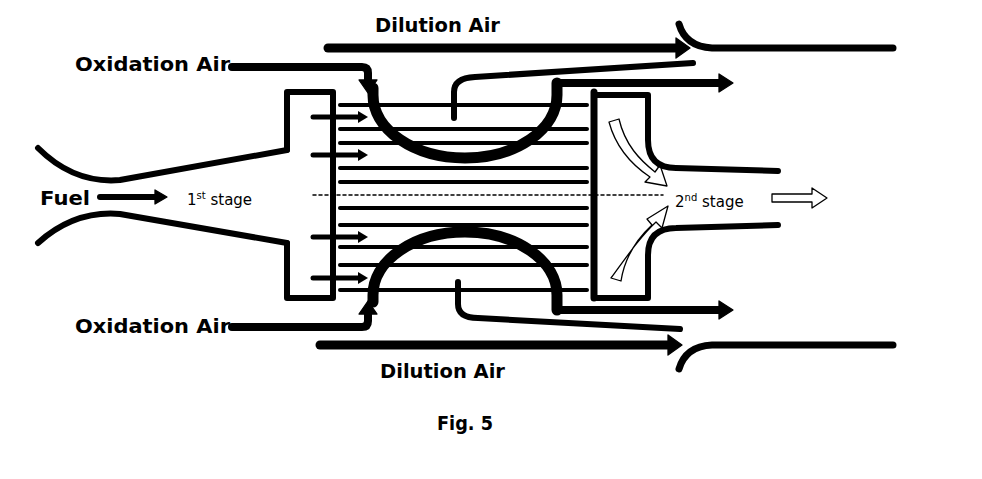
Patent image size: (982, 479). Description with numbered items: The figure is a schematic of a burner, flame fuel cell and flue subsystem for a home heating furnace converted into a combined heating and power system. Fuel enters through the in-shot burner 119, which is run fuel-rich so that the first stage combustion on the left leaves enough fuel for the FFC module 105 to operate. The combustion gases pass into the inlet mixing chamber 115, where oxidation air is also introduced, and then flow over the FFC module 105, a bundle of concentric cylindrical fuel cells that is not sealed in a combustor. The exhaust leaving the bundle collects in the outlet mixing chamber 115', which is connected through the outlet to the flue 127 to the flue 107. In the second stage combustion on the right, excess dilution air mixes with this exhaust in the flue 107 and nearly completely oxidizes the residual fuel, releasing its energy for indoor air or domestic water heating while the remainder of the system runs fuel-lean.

The FFC module 105 is at (463, 197).
The flue 107 is at (865, 54).
The mixing chamber 115 is at (324, 195).
The mixing chamber 115' is at (631, 195).
The in-shot burner 119 is at (162, 207).
The outlet to the flue 127 is at (696, 196).